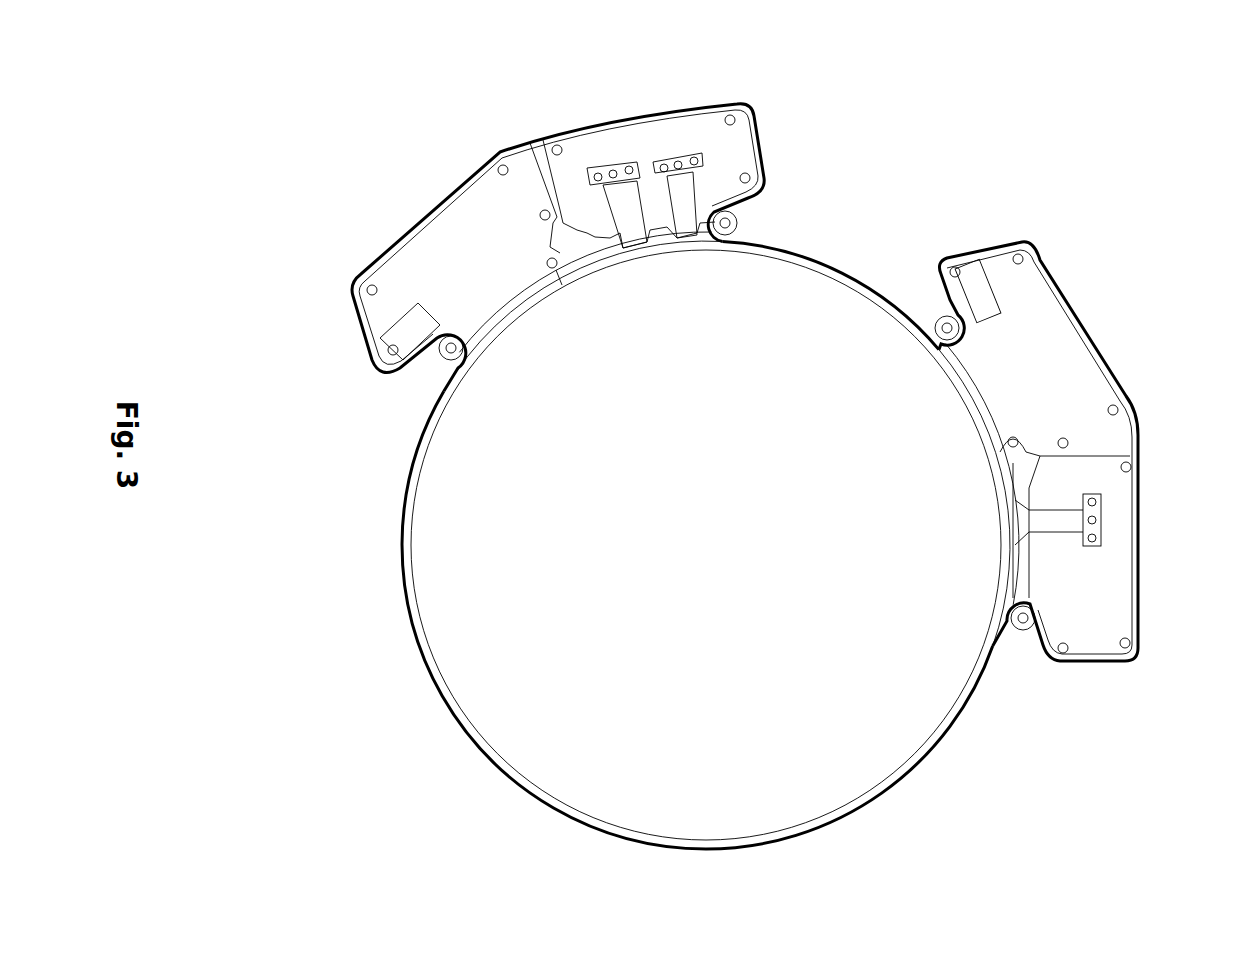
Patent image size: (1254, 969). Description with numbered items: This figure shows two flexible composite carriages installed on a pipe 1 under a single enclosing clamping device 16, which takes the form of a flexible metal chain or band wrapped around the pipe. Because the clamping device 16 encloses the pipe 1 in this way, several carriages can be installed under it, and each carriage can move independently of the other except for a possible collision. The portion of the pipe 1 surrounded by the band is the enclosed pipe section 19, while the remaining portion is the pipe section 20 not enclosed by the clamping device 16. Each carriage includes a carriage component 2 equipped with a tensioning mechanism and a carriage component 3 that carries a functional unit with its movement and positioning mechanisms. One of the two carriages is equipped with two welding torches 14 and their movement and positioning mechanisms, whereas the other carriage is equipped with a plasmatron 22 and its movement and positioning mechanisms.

The pipe 1 is at (420, 491).
The carriage component equipped with tensioning mechanism 2 is at (478, 200).
The carriage component equipped with welding torch and its movement and positioning 3 is at (650, 135).
The welding torch 14 is at (628, 220).
The clamping device in the form of metal chain or band 16 is at (358, 323).
The pipe section enclosed by the clamping device 19 is at (840, 263).
The pipe section not enclosed by the clamping device 20 is at (513, 317).
The plasmatron 22 is at (1057, 522).